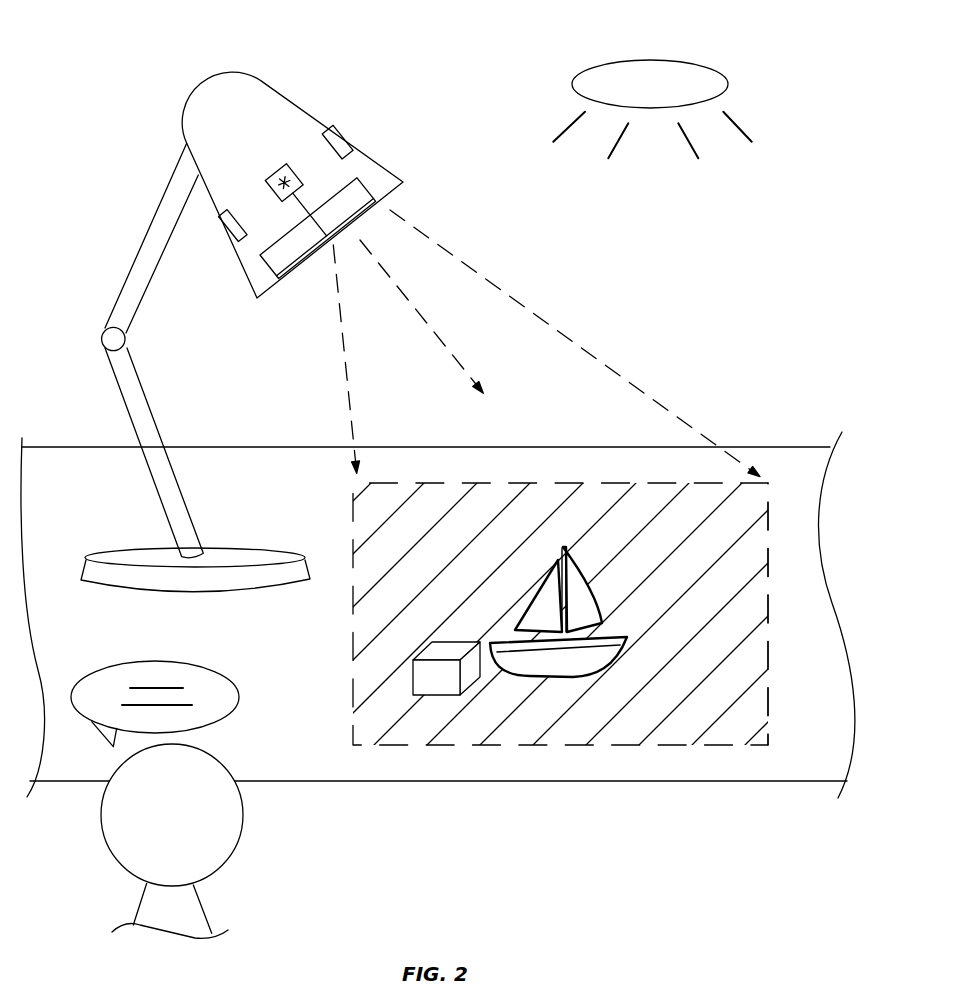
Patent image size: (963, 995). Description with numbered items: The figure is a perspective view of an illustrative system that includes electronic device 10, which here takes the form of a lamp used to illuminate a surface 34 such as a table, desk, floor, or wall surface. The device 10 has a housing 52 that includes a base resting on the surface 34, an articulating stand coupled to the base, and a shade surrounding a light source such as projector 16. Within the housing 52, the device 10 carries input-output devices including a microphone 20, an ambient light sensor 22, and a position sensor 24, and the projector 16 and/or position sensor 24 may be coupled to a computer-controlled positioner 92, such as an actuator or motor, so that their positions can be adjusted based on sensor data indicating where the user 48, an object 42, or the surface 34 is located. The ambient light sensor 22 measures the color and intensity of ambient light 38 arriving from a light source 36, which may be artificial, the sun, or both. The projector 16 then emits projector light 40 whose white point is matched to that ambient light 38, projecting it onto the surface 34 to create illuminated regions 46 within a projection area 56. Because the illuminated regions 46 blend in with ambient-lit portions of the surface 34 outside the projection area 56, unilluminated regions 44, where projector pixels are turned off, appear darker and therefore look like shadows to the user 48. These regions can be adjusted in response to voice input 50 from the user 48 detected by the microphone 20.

The electronic device 10 is at (158, 69).
The housing 52 is at (217, 68).
The projector 16 is at (347, 193).
The position sensor 24 is at (282, 237).
The computer-controlled positioner 92 is at (273, 180).
The ambient light sensor 22 is at (323, 147).
The microphone 20 is at (232, 232).
The light source 36 is at (700, 64).
The ambient light 38 is at (757, 119).
The projector light 40 is at (490, 280).
The surface 34 is at (472, 456).
The illuminated regions 46 is at (703, 483).
The projection area 56 is at (770, 596).
The object 42 is at (438, 683).
The unilluminated regions 44 is at (549, 590).
The voice input 50 is at (206, 669).
The user 48 is at (107, 848).